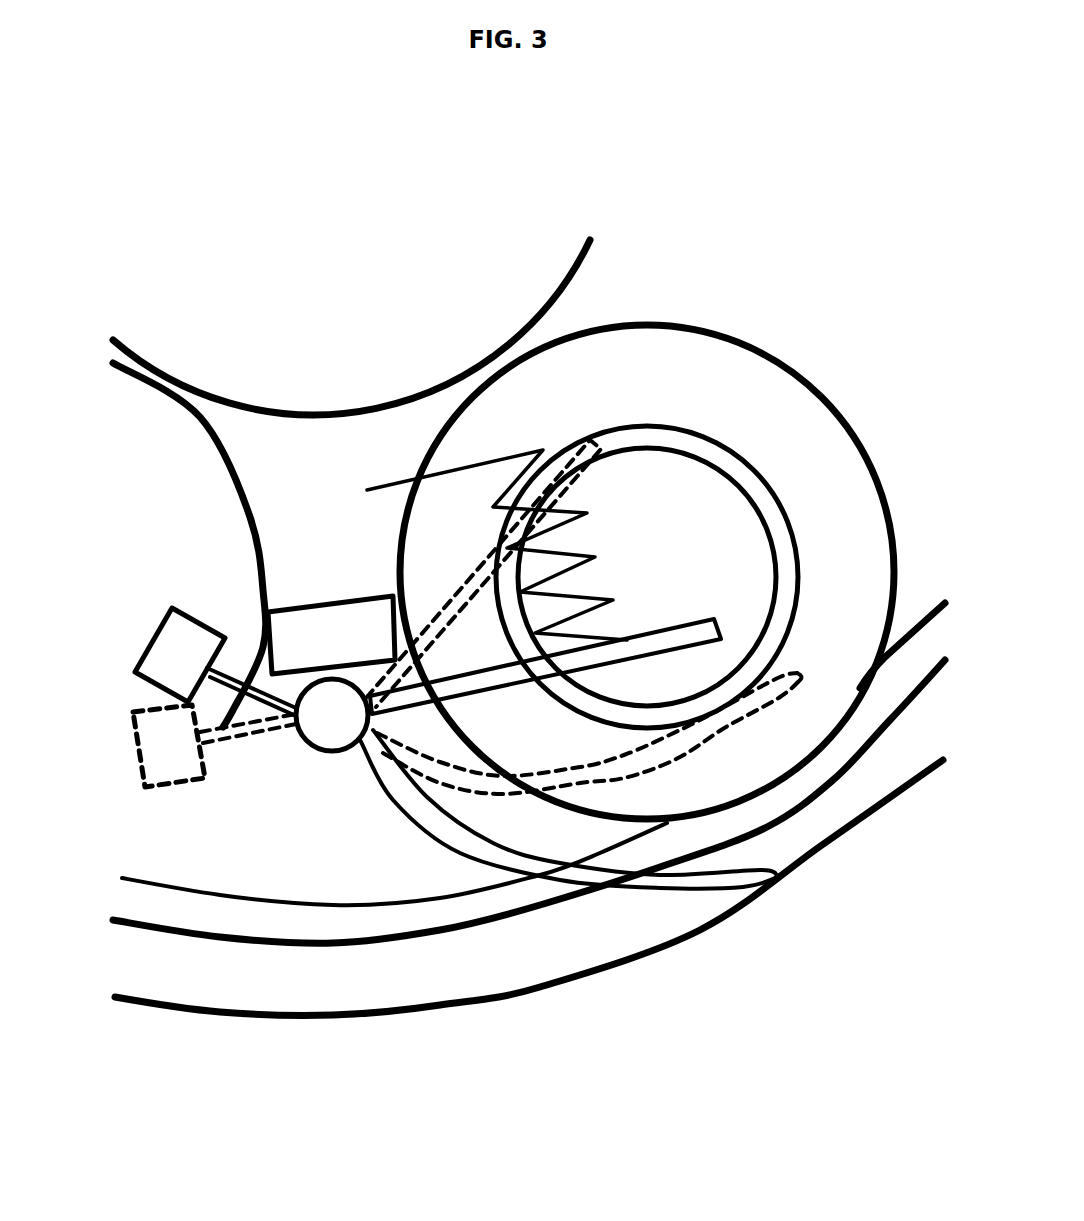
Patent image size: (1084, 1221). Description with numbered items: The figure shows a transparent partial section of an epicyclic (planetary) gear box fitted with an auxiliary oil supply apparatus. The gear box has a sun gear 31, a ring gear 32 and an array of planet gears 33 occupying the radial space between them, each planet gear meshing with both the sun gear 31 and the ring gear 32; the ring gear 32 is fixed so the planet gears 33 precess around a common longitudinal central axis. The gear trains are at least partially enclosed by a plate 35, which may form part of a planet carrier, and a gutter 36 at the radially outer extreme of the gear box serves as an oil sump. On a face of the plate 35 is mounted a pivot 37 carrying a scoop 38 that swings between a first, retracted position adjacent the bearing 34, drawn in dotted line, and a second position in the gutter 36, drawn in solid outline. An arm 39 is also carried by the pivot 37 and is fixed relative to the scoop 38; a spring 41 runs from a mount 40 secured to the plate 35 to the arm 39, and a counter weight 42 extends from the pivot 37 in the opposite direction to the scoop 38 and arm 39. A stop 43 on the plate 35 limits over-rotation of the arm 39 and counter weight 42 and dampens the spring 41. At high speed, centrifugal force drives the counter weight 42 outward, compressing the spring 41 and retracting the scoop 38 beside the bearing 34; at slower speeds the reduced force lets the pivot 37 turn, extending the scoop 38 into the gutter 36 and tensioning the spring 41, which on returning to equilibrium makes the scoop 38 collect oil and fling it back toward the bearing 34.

The sun gear 31 is at (219, 270).
The ring gear 32 is at (196, 921).
The planet gears 33 is at (137, 479).
The bearing 34 is at (708, 437).
The plate 35 is at (339, 887).
The gutter 36 is at (550, 961).
The pivot 37 is at (323, 742).
The scoop 38 is at (734, 887).
The arm 39 is at (728, 611).
The mount 40 is at (376, 471).
The spring 41 is at (514, 471).
The counter weight 42 is at (161, 624).
The stop 43 is at (324, 622).